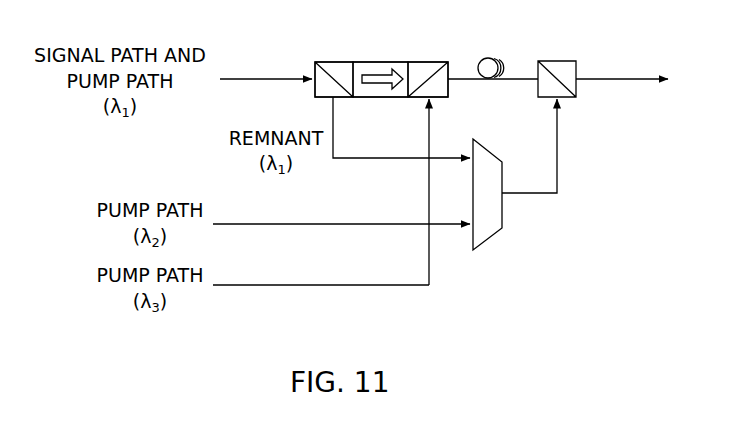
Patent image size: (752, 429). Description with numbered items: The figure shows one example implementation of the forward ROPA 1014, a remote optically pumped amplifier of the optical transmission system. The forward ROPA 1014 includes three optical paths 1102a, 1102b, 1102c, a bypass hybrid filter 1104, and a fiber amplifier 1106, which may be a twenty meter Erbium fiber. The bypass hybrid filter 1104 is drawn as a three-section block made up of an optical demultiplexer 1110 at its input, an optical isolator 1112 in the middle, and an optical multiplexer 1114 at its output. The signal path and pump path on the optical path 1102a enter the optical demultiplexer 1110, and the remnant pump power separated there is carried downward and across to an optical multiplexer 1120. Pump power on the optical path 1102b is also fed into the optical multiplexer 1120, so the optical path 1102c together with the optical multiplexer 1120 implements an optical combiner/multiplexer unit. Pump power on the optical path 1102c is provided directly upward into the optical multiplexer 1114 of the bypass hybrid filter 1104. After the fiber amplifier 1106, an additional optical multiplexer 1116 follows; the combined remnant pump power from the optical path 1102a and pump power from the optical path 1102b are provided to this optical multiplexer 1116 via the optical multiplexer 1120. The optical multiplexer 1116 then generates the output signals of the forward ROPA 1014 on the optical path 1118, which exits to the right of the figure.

The forward ROPA 1014 is at (605, 297).
The optical path 1102a is at (250, 76).
The optical path 1102b is at (324, 219).
The optical path 1102c is at (320, 294).
The bypass hybrid filter 1104 is at (397, 45).
The fiber amplifier 1106 is at (491, 55).
The optical demultiplexer 1110 is at (339, 60).
The optical isolator 1112 is at (390, 103).
The optical multiplexer 1114 is at (451, 90).
The optical multiplexer 1116 is at (566, 58).
The optical path 1118 is at (620, 82).
The optical multiplexer 1120 is at (489, 245).